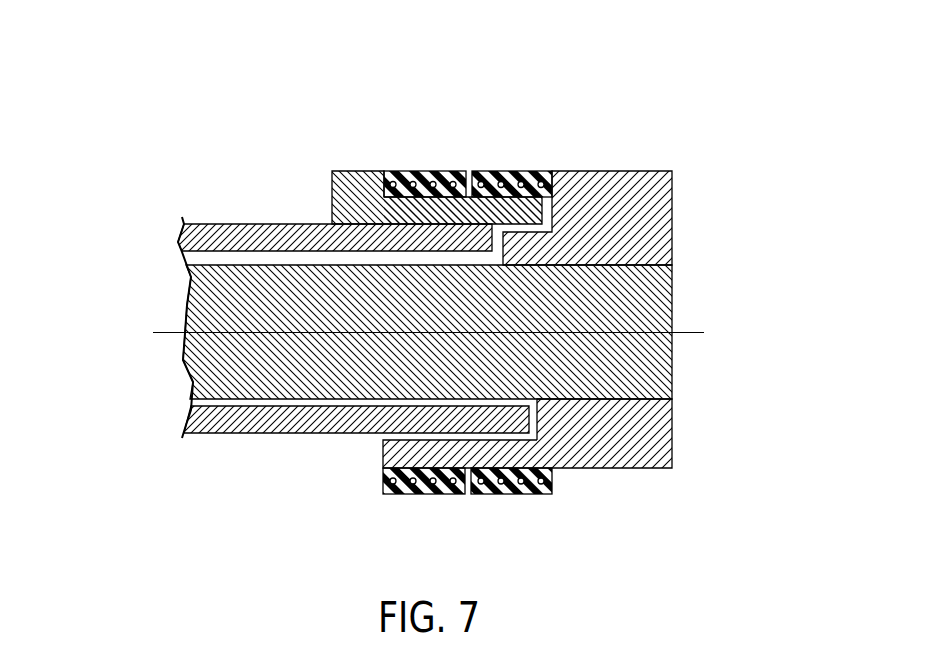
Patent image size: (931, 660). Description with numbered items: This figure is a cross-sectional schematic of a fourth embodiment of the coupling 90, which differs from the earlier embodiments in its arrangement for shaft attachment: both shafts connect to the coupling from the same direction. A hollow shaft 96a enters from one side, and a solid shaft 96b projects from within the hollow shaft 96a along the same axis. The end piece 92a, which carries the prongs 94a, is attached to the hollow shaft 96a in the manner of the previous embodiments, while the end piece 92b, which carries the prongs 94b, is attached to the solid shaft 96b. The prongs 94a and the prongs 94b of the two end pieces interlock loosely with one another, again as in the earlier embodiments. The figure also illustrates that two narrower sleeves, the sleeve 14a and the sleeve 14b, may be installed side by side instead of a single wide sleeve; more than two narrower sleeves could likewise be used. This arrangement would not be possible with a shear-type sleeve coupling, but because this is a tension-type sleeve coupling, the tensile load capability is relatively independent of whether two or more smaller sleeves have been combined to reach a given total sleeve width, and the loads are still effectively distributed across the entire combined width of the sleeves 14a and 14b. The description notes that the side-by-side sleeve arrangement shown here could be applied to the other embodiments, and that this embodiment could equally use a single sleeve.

The coupling 90 is at (407, 346).
The end piece 92a is at (352, 171).
The end piece 92b is at (603, 470).
The prongs 94a is at (517, 210).
The prongs 94b is at (383, 457).
The sleeve 14a is at (424, 171).
The sleeve 14b is at (493, 171).
The hollow shaft 96a is at (205, 224).
The solid shaft 96b is at (190, 283).